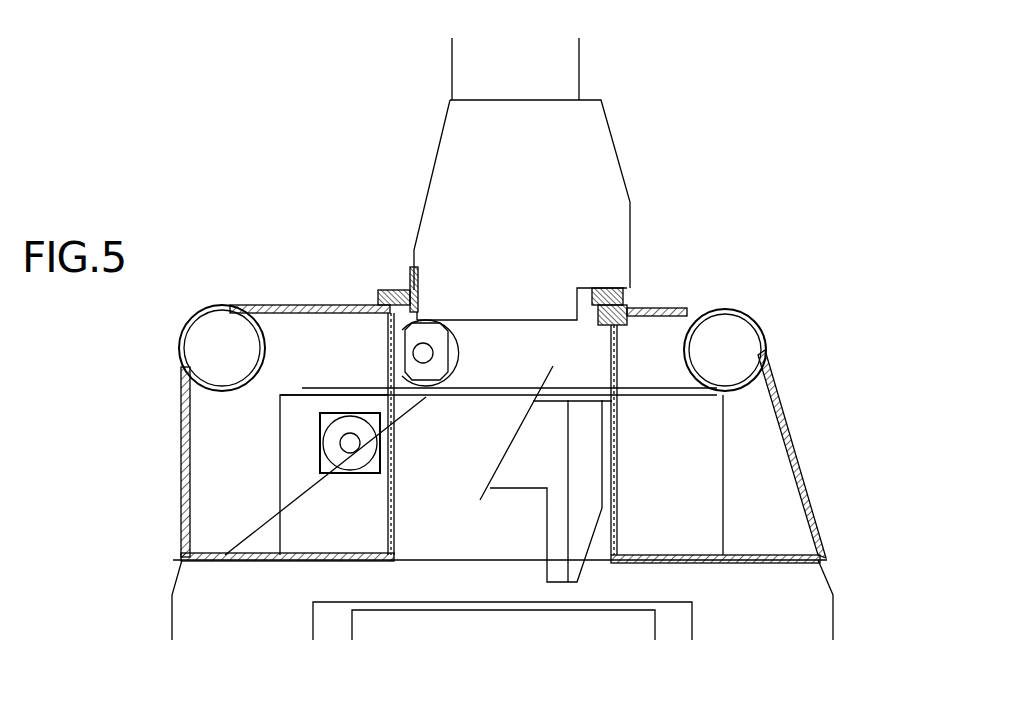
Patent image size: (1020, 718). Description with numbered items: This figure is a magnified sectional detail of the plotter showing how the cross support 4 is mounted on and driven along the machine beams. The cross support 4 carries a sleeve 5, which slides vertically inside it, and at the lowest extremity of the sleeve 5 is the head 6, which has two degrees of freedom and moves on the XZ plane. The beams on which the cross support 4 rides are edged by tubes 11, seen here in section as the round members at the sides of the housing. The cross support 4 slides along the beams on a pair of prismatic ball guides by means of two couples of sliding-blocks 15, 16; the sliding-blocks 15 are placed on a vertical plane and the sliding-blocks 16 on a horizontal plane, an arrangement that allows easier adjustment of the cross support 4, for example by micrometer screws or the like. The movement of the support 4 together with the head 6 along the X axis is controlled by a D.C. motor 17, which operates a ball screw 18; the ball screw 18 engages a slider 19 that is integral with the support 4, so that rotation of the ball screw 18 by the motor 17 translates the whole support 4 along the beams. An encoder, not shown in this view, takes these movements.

The cross support 4 is at (590, 205).
The sleeve 5 is at (553, 80).
The head 6 is at (588, 455).
The tubes 11 is at (762, 326).
The sliding-blocks 15 is at (403, 277).
The sliding-blocks 16 is at (622, 290).
The D.C. motor 17 is at (392, 328).
The ball screw 18 is at (423, 353).
The slider 19 is at (442, 325).